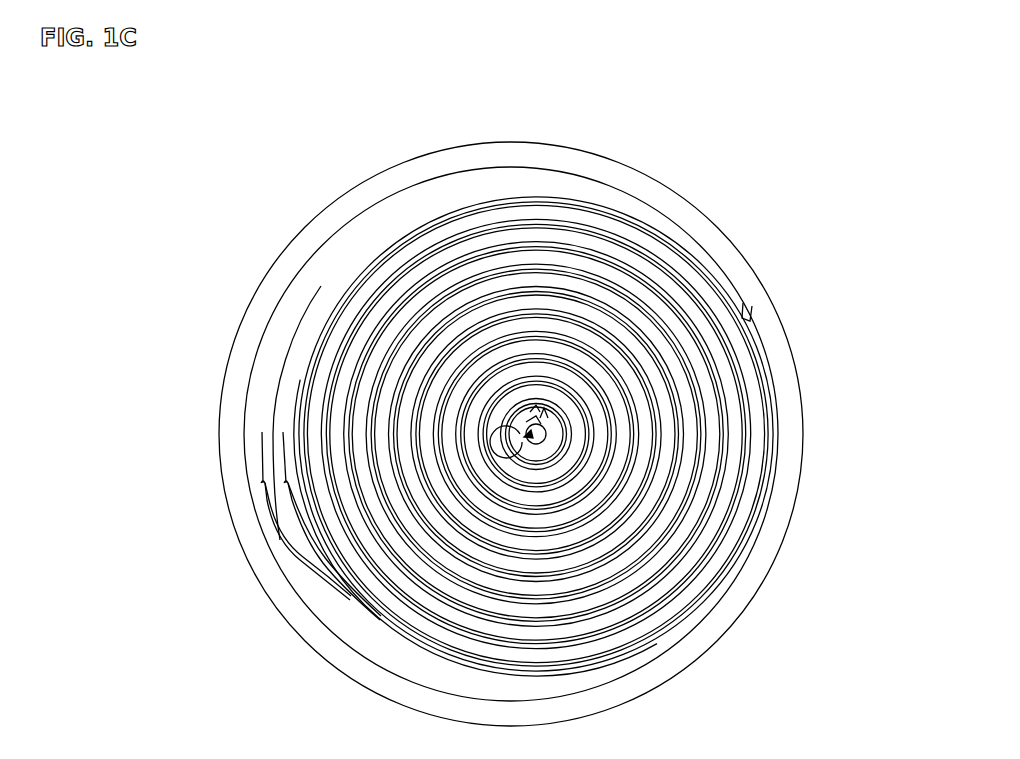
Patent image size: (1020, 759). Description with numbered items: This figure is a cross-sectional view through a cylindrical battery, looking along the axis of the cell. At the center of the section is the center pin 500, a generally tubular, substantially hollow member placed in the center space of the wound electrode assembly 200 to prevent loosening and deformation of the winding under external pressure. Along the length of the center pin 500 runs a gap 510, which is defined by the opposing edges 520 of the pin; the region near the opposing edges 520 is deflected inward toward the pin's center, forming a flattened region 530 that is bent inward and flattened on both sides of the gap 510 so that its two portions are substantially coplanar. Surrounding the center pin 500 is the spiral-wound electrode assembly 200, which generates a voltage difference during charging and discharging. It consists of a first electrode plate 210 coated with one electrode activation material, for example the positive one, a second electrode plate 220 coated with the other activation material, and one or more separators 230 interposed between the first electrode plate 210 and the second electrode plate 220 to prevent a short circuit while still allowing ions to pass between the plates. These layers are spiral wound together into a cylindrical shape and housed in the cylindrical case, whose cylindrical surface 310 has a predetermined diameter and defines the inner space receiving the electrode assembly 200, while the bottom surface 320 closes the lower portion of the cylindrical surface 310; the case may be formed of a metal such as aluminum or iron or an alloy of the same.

The electrode assembly 200 is at (328, 526).
The first electrode plate 210 is at (285, 553).
The second electrode plate 220 is at (323, 563).
The separator 230 is at (305, 503).
The cylindrical surface 310 is at (745, 304).
The bottom surface 320 is at (793, 344).
The center pin 500 is at (528, 426).
The gap 510 is at (524, 440).
The opposing edges 520 is at (533, 410).
The flattened region 530 is at (544, 410).